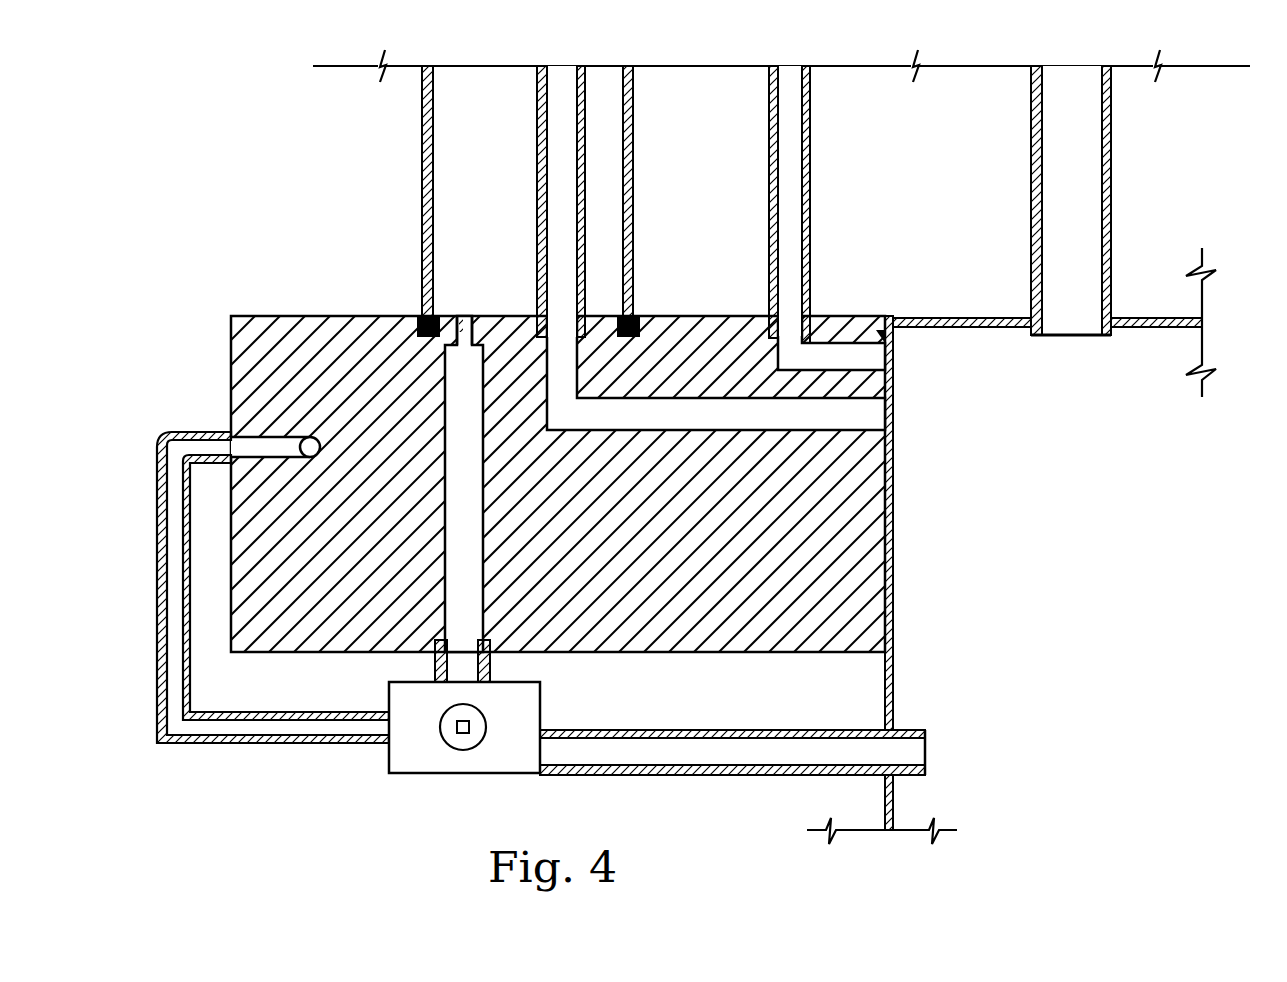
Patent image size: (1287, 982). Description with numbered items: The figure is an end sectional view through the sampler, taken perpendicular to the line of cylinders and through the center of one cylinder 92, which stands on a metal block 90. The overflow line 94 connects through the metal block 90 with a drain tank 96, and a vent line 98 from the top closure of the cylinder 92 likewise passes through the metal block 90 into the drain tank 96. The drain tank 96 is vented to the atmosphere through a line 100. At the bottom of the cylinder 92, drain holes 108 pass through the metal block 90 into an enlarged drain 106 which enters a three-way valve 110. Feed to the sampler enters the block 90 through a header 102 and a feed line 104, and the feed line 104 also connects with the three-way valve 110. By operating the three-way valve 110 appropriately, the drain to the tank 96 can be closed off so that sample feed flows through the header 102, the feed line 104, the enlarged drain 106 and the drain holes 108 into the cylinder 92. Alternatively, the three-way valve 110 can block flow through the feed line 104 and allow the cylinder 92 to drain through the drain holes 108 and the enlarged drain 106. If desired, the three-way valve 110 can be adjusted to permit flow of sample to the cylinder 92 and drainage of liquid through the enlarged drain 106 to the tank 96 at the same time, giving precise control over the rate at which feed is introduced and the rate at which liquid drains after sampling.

The metal block 90 is at (231, 337).
The cylinder 92 is at (423, 183).
The overflow line 94 is at (538, 152).
The drain tank 96 is at (997, 533).
The vent line 98 is at (769, 244).
The line 100 is at (1028, 172).
The header 102 is at (320, 447).
The feed line 104 is at (157, 483).
The enlarged drain 106 is at (484, 548).
The drain holes 108 is at (474, 316).
The three-way valve 110 is at (540, 709).